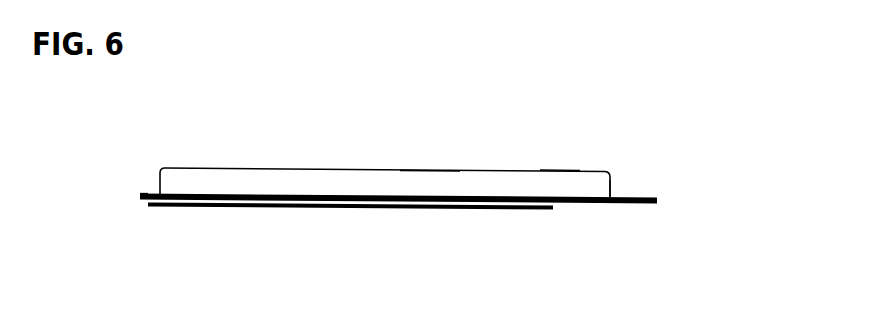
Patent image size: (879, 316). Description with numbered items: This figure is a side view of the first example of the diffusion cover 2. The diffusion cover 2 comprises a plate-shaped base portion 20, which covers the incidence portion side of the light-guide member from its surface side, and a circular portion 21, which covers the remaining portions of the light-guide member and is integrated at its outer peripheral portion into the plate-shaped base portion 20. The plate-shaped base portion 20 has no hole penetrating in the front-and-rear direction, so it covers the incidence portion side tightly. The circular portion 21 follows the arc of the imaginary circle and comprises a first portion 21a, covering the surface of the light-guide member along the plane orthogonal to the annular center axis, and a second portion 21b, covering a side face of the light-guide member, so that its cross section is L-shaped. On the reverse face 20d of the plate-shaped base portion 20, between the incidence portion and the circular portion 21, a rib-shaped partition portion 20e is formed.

The diffusion cover 2 is at (558, 150).
The plate-shaped base portion 20 is at (635, 205).
The reverse face 20d is at (636, 197).
The partition portion 20e is at (612, 188).
The circular portion 21 is at (323, 183).
The first portion 21a is at (146, 193).
The second portion 21b is at (428, 183).